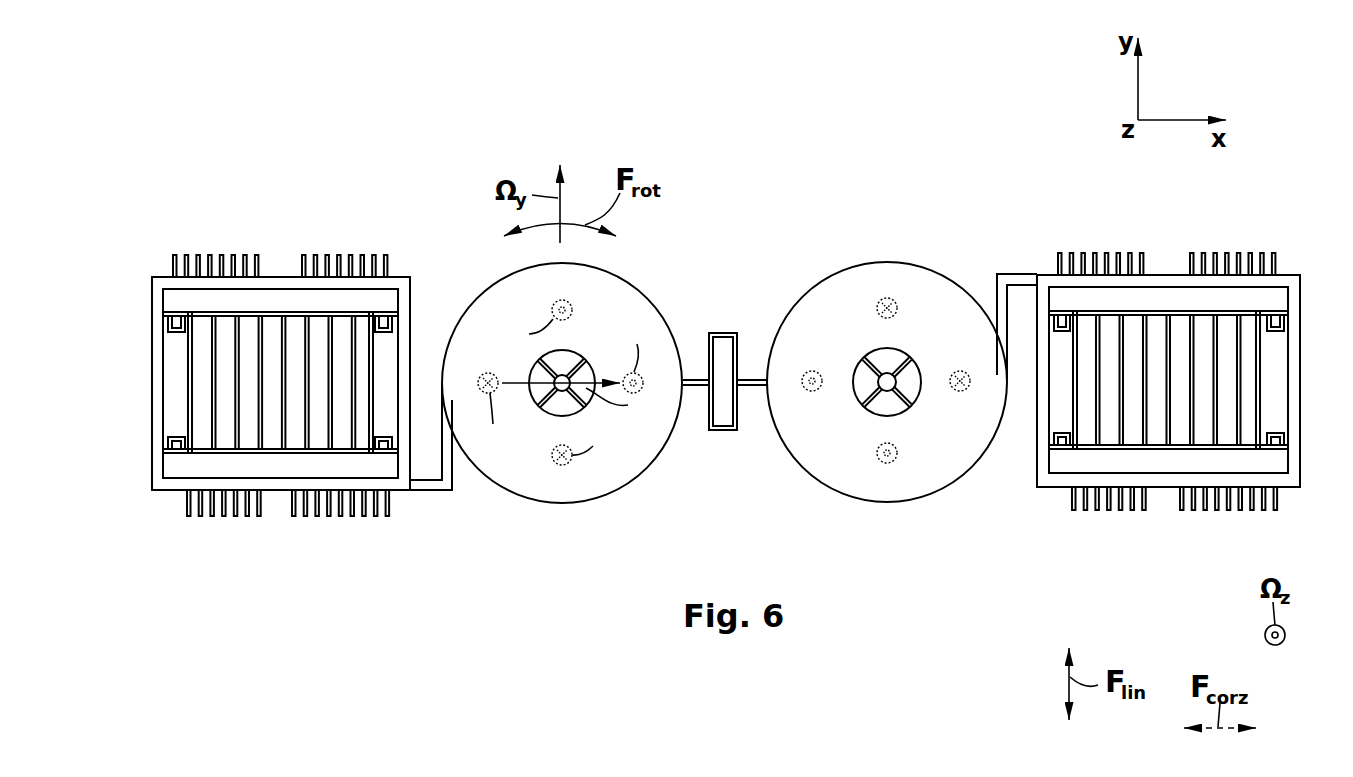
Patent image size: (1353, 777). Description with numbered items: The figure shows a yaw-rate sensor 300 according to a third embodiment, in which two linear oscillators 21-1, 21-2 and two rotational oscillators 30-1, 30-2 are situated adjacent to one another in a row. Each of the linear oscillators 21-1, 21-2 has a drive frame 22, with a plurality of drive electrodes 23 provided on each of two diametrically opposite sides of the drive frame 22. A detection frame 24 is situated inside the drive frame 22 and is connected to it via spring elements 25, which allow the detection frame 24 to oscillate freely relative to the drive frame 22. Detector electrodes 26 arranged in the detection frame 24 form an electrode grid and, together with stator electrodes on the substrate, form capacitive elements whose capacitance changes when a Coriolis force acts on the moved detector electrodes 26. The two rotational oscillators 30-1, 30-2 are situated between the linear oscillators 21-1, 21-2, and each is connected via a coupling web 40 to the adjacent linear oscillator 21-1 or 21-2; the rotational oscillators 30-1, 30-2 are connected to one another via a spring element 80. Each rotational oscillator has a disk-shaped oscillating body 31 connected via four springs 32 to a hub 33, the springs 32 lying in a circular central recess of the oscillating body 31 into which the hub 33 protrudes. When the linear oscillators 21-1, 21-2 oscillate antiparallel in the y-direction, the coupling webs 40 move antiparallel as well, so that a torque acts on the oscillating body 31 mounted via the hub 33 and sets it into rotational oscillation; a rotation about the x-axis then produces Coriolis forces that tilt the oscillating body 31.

The yaw-rate sensor 300 is at (268, 105).
The linear oscillator 21-1 is at (279, 537).
The linear oscillator 21-2 is at (1167, 543).
The drive frame 22 is at (160, 472).
The drive electrodes 23 is at (182, 500).
The detection frame 24 is at (190, 397).
The spring elements 25 is at (168, 328).
The detector electrodes 26 is at (212, 363).
The rotational oscillator 30-1 is at (674, 279).
The rotational oscillator 30-2 is at (882, 243).
The oscillating body 31 is at (558, 489).
The springs 32 is at (862, 397).
The hub 33 is at (888, 385).
The coupling web 40 is at (428, 484).
The spring element 80 is at (723, 432).